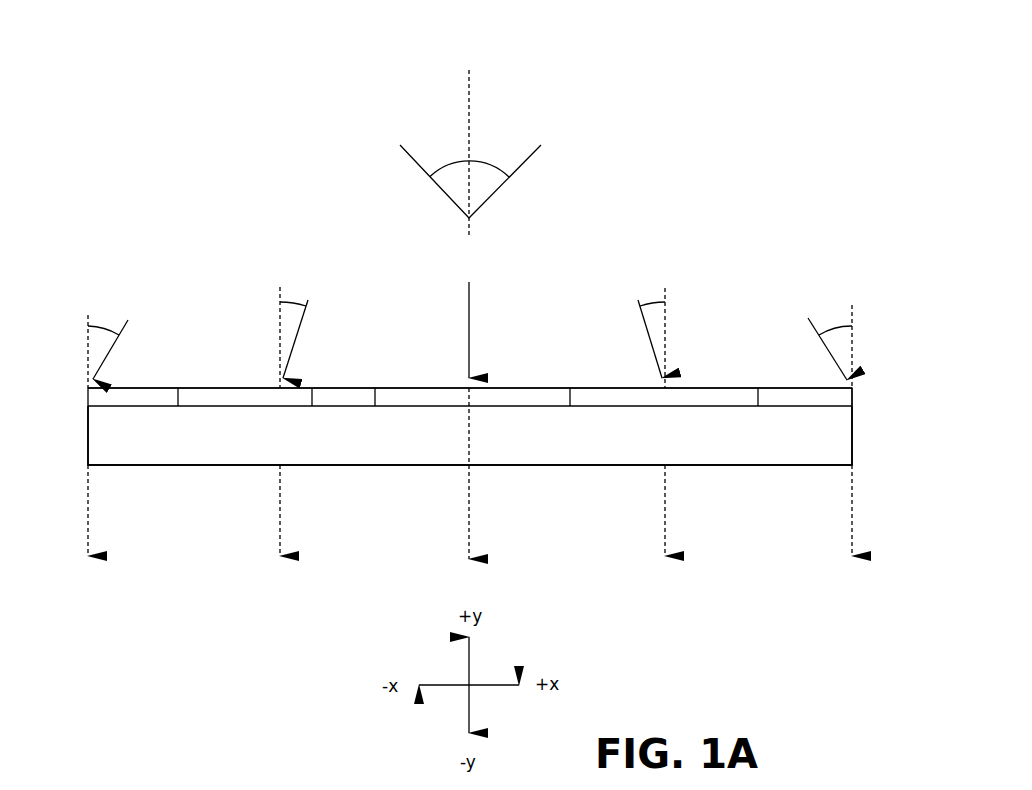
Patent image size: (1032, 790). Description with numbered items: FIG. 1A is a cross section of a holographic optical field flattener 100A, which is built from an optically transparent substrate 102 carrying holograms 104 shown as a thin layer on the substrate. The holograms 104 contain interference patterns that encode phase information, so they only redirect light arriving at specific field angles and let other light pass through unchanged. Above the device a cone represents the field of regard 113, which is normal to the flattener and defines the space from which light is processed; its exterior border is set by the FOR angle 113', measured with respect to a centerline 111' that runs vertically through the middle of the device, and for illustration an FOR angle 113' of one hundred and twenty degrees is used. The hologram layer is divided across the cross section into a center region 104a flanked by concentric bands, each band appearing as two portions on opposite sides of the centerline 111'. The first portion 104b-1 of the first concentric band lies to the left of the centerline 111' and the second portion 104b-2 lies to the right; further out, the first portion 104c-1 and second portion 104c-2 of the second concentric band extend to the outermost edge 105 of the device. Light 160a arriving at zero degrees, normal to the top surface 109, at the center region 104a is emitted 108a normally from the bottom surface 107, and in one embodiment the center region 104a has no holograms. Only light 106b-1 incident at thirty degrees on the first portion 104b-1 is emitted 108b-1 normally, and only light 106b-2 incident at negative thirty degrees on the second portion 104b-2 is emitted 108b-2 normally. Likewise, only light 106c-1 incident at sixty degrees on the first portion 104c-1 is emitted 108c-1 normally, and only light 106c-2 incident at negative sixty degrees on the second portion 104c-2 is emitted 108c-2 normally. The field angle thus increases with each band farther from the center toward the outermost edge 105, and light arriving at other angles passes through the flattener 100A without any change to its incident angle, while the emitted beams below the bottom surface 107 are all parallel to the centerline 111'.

The holographic optical field flattener 100A is at (498, 40).
The optically transparent substrate 102 is at (888, 406).
The holograms 104 is at (888, 388).
The center region 104a is at (485, 400).
The first portion of the first concentric band 104b-1 is at (316, 400).
The second portion of the first concentric band 104b-2 is at (692, 397).
The first portion of the second concentric band 104c-1 is at (140, 400).
The second portion of the second concentric band 104c-2 is at (812, 397).
The outermost edge 105 is at (87, 452).
The light incident at thirty degrees 106b-1 is at (292, 352).
The light incident at negative thirty degrees 106b-2 is at (653, 348).
The light incident at sixty degrees 106c-1 is at (110, 352).
The light incident at negative sixty degrees 106c-2 is at (815, 327).
The bottom surface 107 is at (403, 465).
The light emitted from the center region 108a is at (471, 532).
The light emitted from the first portion of the first concentric band 108b-1 is at (278, 532).
The light emitted from the second portion of the first concentric band 108b-2 is at (665, 532).
The light emitted from the first portion of the second concentric band 108c-1 is at (86, 532).
The light emitted from the second portion of the second concentric band 108c-2 is at (847, 532).
The top surface 109 is at (393, 402).
The centerline 111' is at (521, 426).
The field of regard 113 is at (439, 181).
The FOR angle 113' is at (472, 143).
The central incident light beam 160a is at (471, 224).